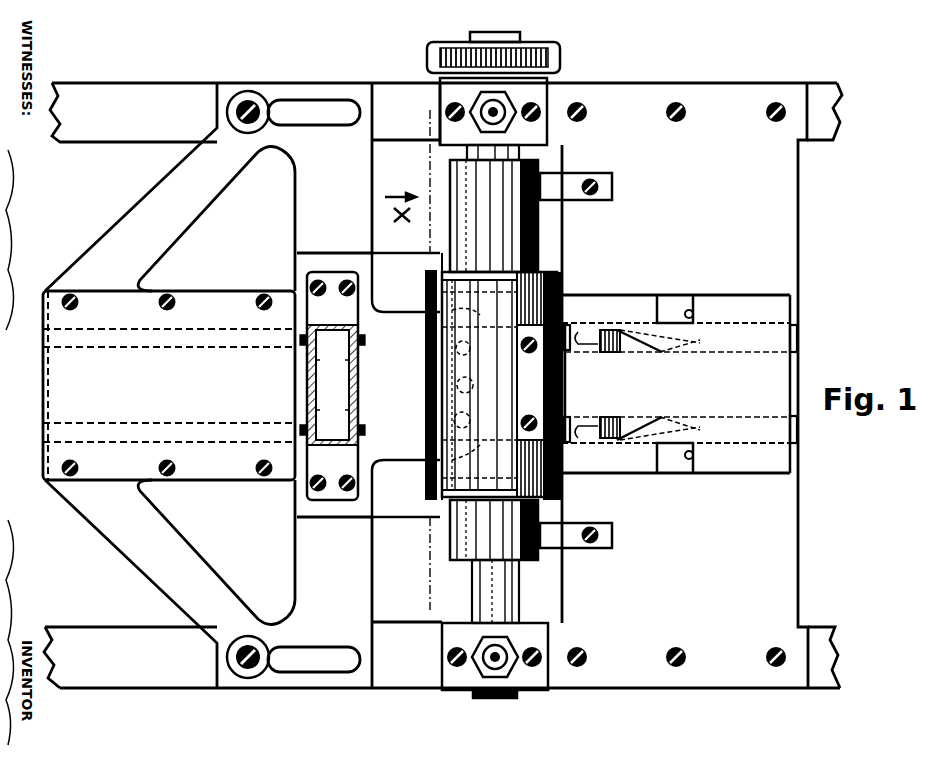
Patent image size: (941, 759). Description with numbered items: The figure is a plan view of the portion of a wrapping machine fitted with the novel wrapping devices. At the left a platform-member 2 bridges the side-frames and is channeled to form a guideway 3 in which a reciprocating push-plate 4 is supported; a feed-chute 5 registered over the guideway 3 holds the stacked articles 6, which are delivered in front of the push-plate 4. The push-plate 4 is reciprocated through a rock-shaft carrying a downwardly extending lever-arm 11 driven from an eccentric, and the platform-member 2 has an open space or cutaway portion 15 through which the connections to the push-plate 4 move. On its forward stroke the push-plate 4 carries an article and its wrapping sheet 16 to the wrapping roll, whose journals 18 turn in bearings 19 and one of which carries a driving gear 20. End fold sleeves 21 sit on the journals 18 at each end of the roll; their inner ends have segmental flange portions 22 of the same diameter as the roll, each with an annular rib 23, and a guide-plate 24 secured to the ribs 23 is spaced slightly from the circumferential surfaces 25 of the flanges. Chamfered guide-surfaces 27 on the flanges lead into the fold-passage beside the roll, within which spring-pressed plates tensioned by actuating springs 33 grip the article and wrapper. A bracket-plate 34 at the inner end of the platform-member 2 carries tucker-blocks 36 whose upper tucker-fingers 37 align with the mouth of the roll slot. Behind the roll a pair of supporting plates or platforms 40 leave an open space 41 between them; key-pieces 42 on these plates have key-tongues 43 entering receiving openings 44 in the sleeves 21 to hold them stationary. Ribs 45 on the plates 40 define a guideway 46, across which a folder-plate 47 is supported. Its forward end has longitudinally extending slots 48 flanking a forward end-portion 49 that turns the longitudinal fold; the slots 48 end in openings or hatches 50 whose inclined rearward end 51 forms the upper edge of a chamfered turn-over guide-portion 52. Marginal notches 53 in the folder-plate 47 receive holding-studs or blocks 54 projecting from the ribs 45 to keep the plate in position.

The platform-member 2 is at (172, 226).
The guideway 3 is at (193, 330).
The push-plate 4 is at (40, 375).
The feed-chute 5 is at (332, 326).
The articles 6 is at (332, 386).
The downwardly extending lever-arm 11 is at (531, 382).
The open space or cutaway portion 15 is at (158, 425).
The wrapping sheet 16 is at (440, 357).
The journals 18 is at (540, 150).
The bearings 19 is at (548, 97).
The driving gear 20 is at (552, 56).
The end fold sleeves 21 is at (542, 227).
The segmental flange portions 22 is at (563, 320).
The annular rib 23 is at (560, 276).
The guide-plate 24 is at (491, 376).
The circumferential surfaces 25 is at (562, 298).
The chamfered guide-surfaces 27 is at (478, 318).
The actuating springs 33 is at (472, 368).
The bracket-plate 34 is at (397, 253).
The tucker-blocks 36 is at (421, 253).
The upper tucker-fingers 37 is at (436, 252).
The supporting plates or platforms 40 is at (685, 385).
The open space 41 is at (800, 383).
The key-pieces 42 is at (613, 186).
The key-tongues 43 is at (541, 166).
The receiving openings 44 is at (542, 209).
The ribs 45 is at (643, 297).
The guideway 46 is at (798, 343).
The folder-plate 47 is at (664, 387).
The longitudinally extending slots 48 is at (585, 340).
The forward end-portion 49 is at (567, 383).
The openings or hatches 50 is at (620, 384).
The rearward end 51 is at (640, 356).
The turn-over guide-portion 52 is at (668, 347).
The marginal notches 53 is at (692, 310).
The holding-studs or blocks 54 is at (678, 300).